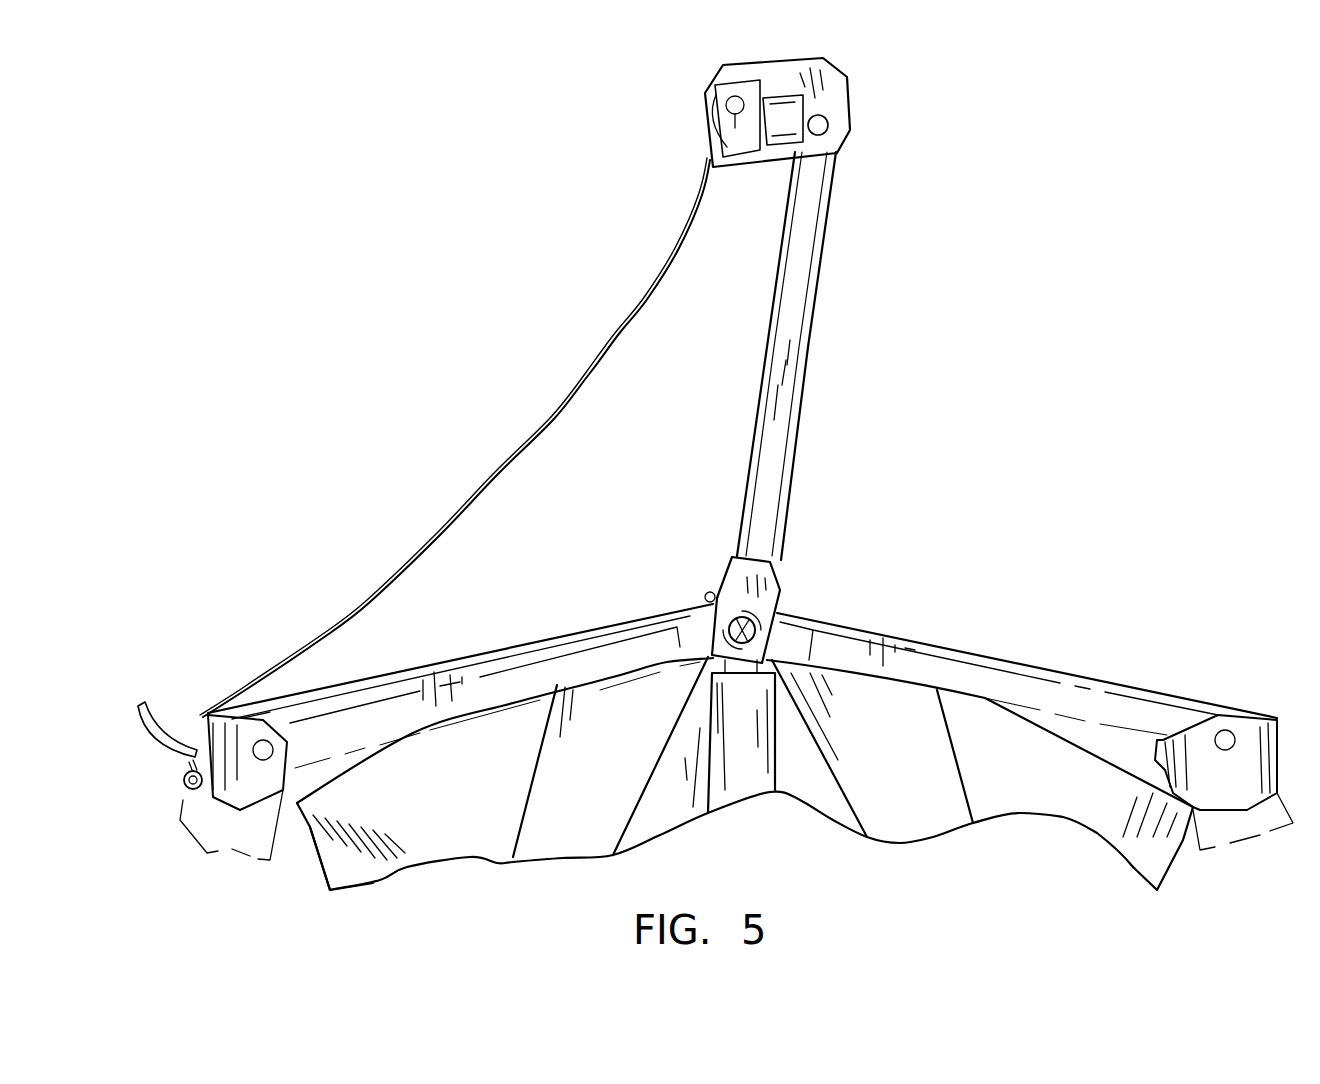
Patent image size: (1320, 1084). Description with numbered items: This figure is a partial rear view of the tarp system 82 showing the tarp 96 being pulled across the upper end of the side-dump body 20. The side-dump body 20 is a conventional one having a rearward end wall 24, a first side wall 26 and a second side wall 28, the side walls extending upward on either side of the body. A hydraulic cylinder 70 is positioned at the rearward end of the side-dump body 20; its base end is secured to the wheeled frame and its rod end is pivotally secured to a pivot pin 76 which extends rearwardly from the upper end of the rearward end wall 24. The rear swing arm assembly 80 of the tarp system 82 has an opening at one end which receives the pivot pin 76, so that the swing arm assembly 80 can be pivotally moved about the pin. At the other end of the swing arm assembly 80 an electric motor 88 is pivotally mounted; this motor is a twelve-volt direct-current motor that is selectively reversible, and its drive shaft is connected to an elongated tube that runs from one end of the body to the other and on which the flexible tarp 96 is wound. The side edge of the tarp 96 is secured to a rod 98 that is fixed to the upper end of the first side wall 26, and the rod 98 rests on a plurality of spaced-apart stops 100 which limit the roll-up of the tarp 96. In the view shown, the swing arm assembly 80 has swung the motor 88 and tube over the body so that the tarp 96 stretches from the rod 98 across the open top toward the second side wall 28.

The side-dump body 20 is at (512, 872).
The rearward end wall 24 is at (614, 782).
The first side wall 26 is at (327, 875).
The second side wall 28 is at (1163, 865).
The hydraulic cylinder 70 is at (753, 727).
The pivot pin 76 is at (760, 630).
The rear swing arm assembly 80 is at (782, 412).
The tarp system 82 is at (523, 372).
The electric motor 88 is at (837, 92).
The tarp 96 is at (437, 535).
The rod 98 is at (185, 797).
The stops 100 is at (157, 727).